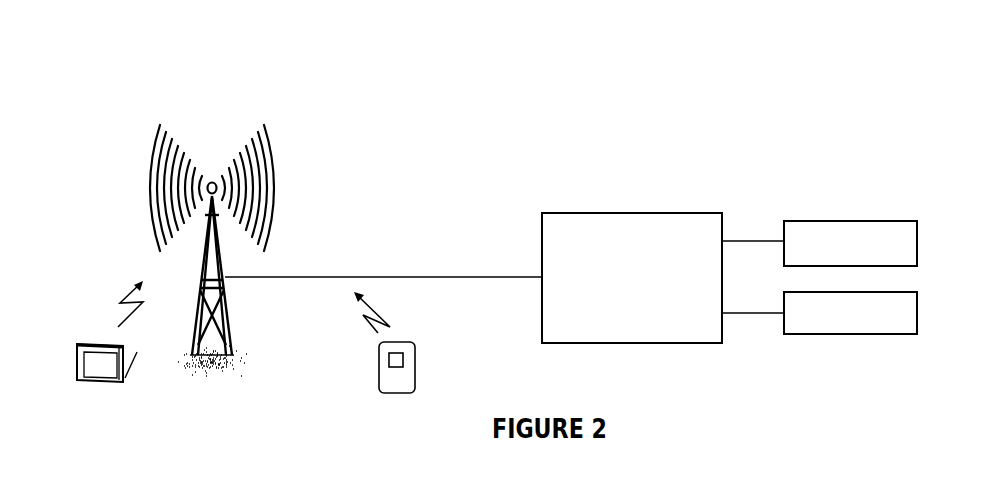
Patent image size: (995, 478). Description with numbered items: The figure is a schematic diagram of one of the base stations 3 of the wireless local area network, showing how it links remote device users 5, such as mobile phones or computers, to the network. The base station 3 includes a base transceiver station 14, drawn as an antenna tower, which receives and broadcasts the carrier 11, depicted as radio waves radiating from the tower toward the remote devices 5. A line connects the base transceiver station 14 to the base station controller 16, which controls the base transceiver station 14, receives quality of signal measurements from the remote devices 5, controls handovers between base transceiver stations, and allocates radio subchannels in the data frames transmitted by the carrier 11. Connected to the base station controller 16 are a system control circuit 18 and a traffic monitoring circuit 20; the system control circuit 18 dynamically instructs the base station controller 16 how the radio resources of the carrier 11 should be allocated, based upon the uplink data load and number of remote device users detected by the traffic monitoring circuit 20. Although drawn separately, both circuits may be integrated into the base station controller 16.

The base station 3 is at (223, 75).
The remote device user 5 is at (103, 377).
The carrier 11 is at (278, 173).
The base transceiver station 14 is at (226, 287).
The base station controller 16 is at (622, 330).
The system control circuit 18 is at (895, 237).
The traffic monitoring circuit 20 is at (908, 322).